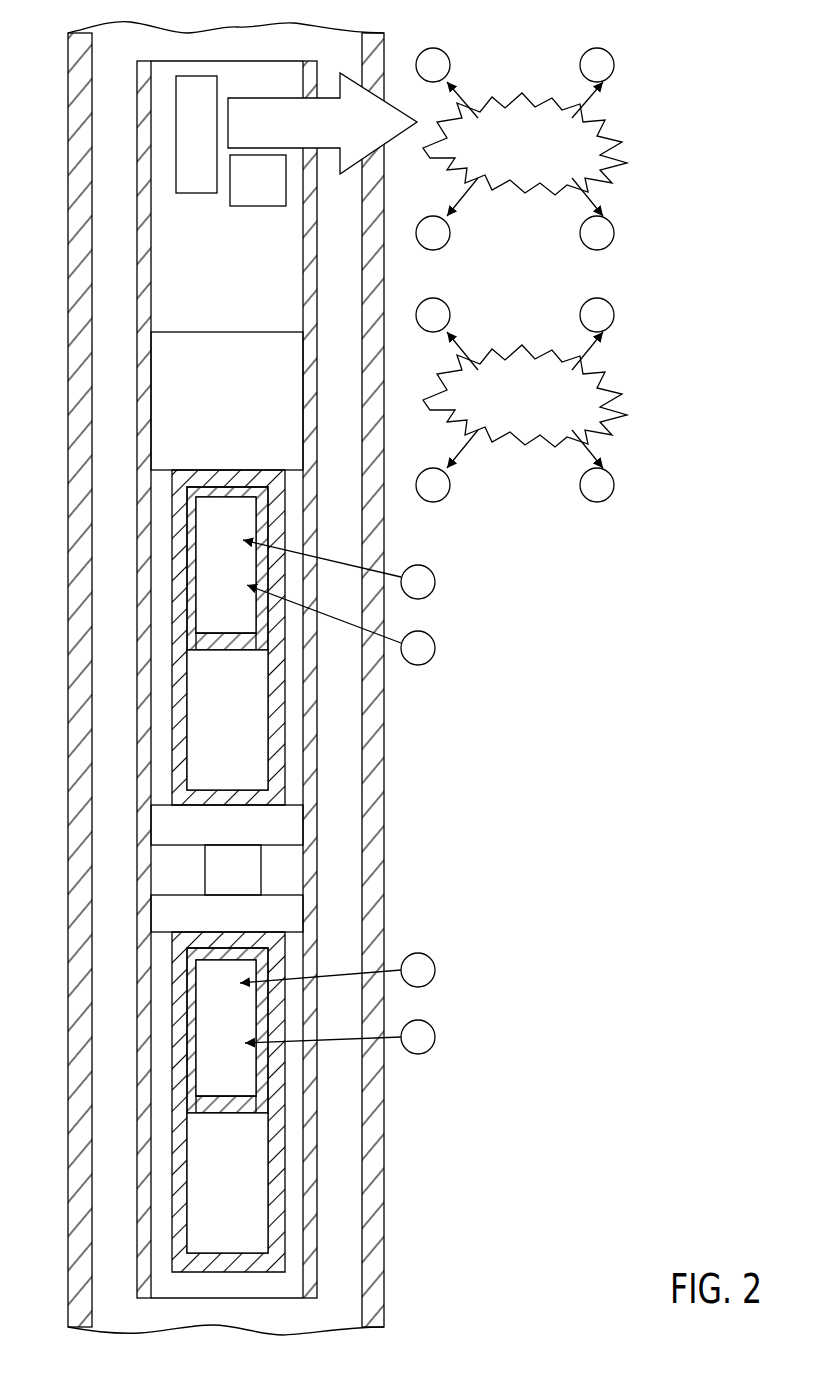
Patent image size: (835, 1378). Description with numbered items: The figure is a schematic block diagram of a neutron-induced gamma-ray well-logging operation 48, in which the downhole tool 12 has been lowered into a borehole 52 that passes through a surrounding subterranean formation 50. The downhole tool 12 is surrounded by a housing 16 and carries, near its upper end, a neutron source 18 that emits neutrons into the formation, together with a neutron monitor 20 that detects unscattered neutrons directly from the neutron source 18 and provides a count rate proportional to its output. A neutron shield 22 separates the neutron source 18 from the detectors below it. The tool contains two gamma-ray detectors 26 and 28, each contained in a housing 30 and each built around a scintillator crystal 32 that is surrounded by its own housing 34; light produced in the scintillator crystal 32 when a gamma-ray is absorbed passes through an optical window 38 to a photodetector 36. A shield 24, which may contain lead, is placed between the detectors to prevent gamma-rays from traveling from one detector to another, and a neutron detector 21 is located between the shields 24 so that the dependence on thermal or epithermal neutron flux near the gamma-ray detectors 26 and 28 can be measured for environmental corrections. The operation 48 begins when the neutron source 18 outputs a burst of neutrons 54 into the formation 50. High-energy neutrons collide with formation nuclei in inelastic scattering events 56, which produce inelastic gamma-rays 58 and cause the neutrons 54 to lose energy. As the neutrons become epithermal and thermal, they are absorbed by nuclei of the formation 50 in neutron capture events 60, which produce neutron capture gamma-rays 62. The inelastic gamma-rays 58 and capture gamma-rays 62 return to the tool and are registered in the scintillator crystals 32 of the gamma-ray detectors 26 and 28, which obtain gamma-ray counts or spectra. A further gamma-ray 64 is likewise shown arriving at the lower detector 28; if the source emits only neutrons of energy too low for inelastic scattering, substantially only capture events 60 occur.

The downhole tool 12 is at (135, 1243).
The housing 16 is at (143, 87).
The neutron source 18 is at (195, 77).
The neutron monitor 20 is at (280, 207).
The neutron detector 21 is at (262, 872).
The neutron shield 22 is at (168, 367).
The shield 24 is at (168, 818).
The gamma-ray detector 26 is at (170, 500).
The gamma-ray detector 28 is at (170, 978).
The housing 30 is at (181, 534).
The scintillator crystal 32 is at (203, 567).
The housing 34 is at (192, 613).
The photodetector 36 is at (197, 727).
The optical window 38 is at (197, 643).
The well-logging operation 48 is at (719, 972).
The subterranean formation 50 is at (677, 627).
The borehole 52 is at (80, 70).
The neutrons 54 is at (240, 97).
The inelastic scattering event 56 is at (548, 113).
The inelastic gamma-ray 58 is at (447, 53).
The neutron capture event 60 is at (548, 363).
The neutron capture gamma-ray 62 is at (447, 305).
The gamma ray 64 is at (431, 1024).